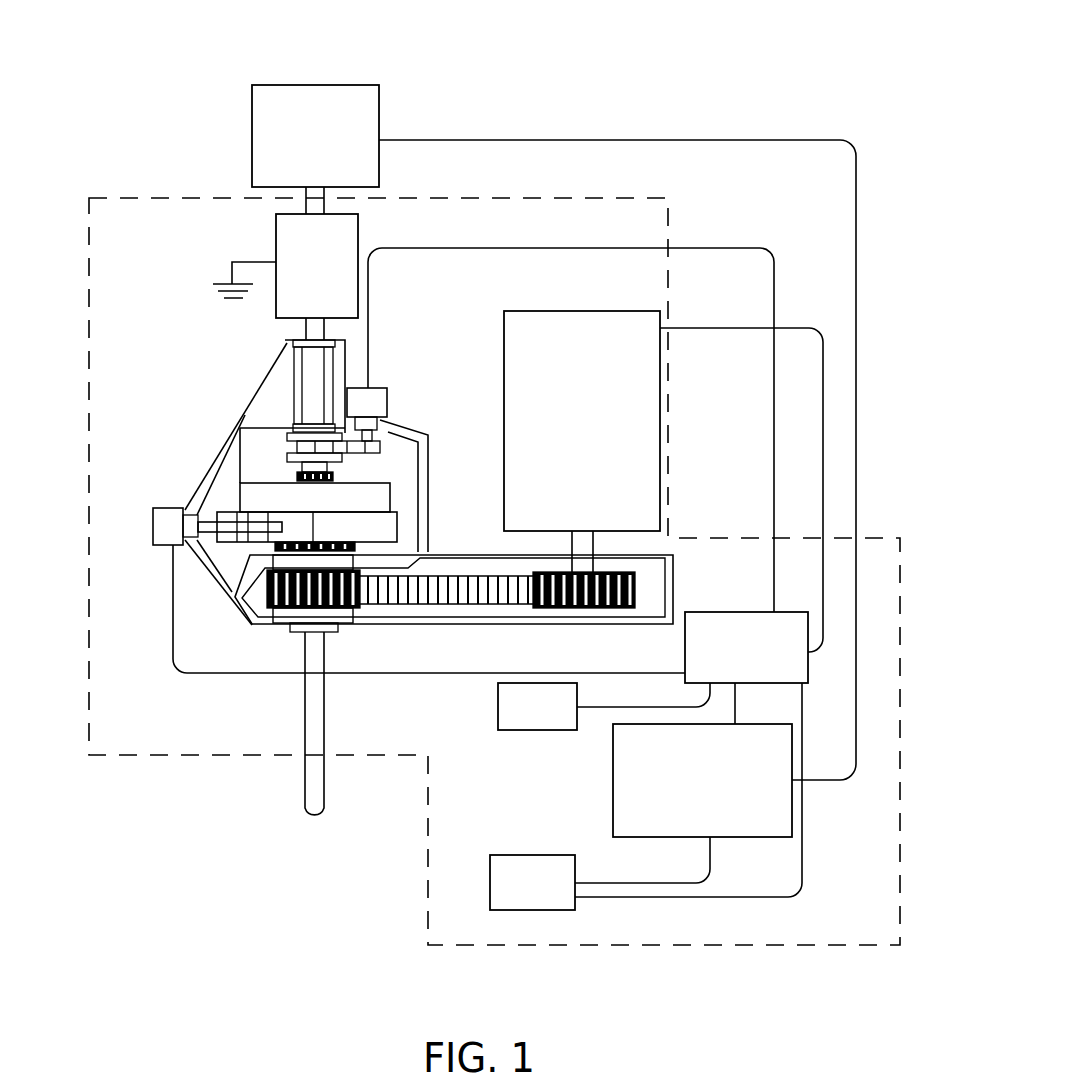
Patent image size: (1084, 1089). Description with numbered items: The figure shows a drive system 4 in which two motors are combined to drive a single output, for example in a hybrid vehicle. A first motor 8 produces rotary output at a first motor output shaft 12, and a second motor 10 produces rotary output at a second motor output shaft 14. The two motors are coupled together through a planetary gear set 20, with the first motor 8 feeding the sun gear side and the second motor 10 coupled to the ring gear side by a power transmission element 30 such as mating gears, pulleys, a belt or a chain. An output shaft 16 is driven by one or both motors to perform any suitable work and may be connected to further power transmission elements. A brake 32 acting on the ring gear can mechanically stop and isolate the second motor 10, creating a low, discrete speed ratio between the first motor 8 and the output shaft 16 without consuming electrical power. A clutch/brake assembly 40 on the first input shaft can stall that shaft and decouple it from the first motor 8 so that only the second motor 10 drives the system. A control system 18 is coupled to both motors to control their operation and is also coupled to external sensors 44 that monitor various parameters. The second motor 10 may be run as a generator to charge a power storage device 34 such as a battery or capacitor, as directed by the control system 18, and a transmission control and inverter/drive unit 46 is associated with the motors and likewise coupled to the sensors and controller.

The drive system 4 is at (752, 74).
The first motor 8 is at (260, 130).
The second motor 10 is at (642, 430).
The first motor output shaft 12 is at (310, 205).
The second motor output shaft 14 is at (575, 543).
The output shaft 16 is at (317, 707).
The control system 18 is at (630, 777).
The planetary gear set 20 is at (248, 488).
The power transmission element 30 is at (440, 597).
The brake 32 is at (208, 523).
The power storage device 34 is at (520, 700).
The clutch/brake assembly 40 is at (295, 298).
The external sensors 44 is at (520, 865).
The transmission control and inverter/drive unit 46 is at (702, 648).